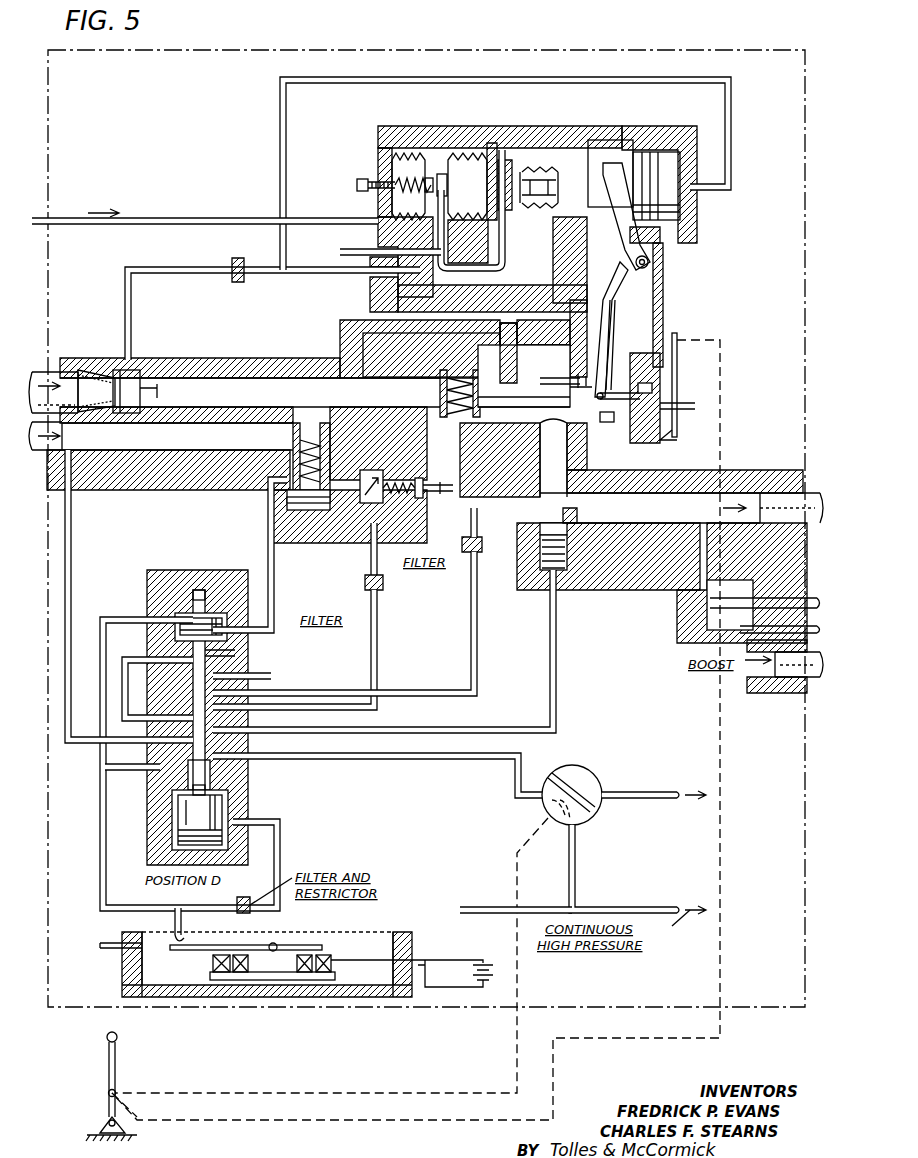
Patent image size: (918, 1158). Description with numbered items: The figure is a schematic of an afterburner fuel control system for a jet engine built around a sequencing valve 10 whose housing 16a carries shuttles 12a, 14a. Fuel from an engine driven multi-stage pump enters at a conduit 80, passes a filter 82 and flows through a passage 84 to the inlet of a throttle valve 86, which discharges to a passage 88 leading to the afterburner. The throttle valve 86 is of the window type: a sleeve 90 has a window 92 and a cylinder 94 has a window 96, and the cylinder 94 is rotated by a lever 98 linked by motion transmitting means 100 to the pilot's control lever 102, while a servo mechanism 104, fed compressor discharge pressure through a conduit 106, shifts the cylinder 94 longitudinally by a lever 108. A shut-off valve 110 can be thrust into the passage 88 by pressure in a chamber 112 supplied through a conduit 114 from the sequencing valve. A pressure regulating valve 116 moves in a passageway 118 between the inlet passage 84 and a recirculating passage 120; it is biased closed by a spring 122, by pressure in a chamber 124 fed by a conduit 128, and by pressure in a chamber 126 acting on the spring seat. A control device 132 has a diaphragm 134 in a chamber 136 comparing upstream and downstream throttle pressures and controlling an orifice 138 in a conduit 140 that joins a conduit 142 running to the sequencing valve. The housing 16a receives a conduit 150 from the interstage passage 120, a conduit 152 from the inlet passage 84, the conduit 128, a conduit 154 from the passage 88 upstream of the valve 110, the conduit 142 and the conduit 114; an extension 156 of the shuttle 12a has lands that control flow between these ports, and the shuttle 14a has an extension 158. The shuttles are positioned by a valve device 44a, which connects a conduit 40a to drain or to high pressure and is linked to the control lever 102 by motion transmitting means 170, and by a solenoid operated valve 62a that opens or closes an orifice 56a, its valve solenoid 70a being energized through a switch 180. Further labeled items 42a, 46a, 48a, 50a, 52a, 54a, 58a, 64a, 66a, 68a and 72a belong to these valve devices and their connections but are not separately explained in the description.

The sequencing valve 10 is at (199, 564).
The shuttle 12a is at (190, 813).
The shuttle 14a is at (222, 627).
The valve housing 16a is at (243, 640).
The conduit 40a is at (337, 760).
The electric circuit 42a is at (483, 932).
The two-position valve device 44a is at (595, 773).
The inlet conduit 46a is at (650, 797).
The conduit 48a is at (576, 857).
The high pressure conduit 50a is at (123, 617).
The conduit 52a is at (277, 823).
The conduit 54a is at (143, 660).
The orifice 56a is at (170, 937).
The conduit 58a is at (183, 920).
The solenoid operated valve device 62a is at (293, 932).
The solenoid 64a is at (387, 932).
The plunger 66a is at (102, 948).
The armature 68a is at (325, 948).
The valve solenoid 70a is at (331, 967).
The conduit 72a is at (123, 777).
The conduit 80 is at (52, 373).
The filter 82 is at (137, 365).
The passage 84 is at (222, 378).
The throttle valve 86 is at (600, 427).
The passage 88 is at (653, 500).
The sleeve 90 is at (545, 440).
The window 92 is at (595, 437).
The cylinder 94 is at (517, 417).
The window 96 is at (553, 395).
The lever 98 is at (675, 340).
The motion transmitting means 100 is at (723, 368).
The control lever 102 is at (118, 1062).
The servo mechanism 104 is at (562, 113).
The conduit 106 is at (155, 220).
The lever 108 is at (650, 245).
The valve 110 is at (577, 530).
The chamber 112 is at (567, 557).
The conduit 114 is at (293, 735).
The pressure regulating valve 116 is at (280, 440).
The passageway 118 is at (307, 412).
The recirculating passage 120 is at (168, 430).
The spring 122 is at (283, 507).
The chamber 124 is at (290, 490).
The chamber 126 is at (290, 530).
The conduit 128 is at (273, 590).
The pressure responsive control device 132 is at (322, 527).
The diaphragm 134 is at (385, 480).
The chamber 136 is at (427, 507).
The orifice 138 is at (410, 517).
The conduit 140 is at (303, 556).
The conduit 142 is at (377, 622).
The conduit 150 is at (90, 740).
The conduit 152 is at (123, 690).
The conduit 154 is at (392, 690).
The extension 156 is at (213, 768).
The extension 158 is at (213, 669).
The motion transmitting means 170 is at (243, 1093).
The switch 180 is at (430, 960).